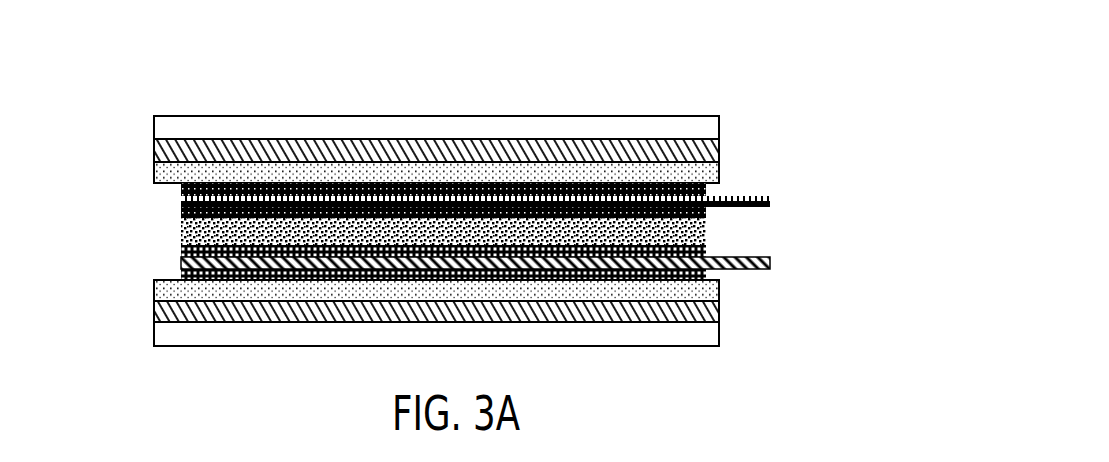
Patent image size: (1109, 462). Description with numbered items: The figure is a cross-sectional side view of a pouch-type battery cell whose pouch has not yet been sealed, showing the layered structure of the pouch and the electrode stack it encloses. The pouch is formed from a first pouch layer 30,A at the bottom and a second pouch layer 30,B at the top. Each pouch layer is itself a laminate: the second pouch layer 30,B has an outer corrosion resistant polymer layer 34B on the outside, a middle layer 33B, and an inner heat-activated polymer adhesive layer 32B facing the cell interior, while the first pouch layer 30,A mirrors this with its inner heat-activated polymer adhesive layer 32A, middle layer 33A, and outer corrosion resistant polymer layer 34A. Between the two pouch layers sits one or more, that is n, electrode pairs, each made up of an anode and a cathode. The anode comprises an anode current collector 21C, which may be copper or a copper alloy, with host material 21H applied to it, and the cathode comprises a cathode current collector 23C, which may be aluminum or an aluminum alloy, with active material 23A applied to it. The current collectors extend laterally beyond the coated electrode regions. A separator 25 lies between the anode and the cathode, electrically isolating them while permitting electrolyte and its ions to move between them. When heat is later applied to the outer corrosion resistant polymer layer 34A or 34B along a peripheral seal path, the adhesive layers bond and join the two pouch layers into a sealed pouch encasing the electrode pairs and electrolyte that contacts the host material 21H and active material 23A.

The second pouch layer 30,B is at (138, 117).
The first pouch layer 30,A is at (138, 281).
The outer corrosion resistant polymer layer 34B is at (712, 127).
The middle layer 33B is at (712, 150).
The inner heat-activated polymer adhesive layer 32B is at (712, 172).
The inner heat-activated polymer adhesive layer 32A is at (712, 290).
The middle layer 33A is at (712, 311).
The outer corrosion resistant polymer layer 34A is at (712, 333).
The electrode pairs n is at (77, 183).
The host material 21H is at (181, 192).
The anode current collector 21C is at (771, 202).
The separator 25 is at (690, 233).
The active material 23A is at (181, 253).
The cathode current collector 23C is at (771, 264).